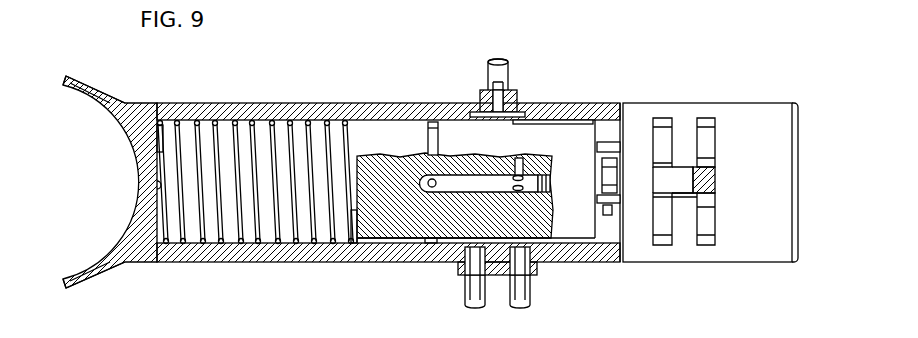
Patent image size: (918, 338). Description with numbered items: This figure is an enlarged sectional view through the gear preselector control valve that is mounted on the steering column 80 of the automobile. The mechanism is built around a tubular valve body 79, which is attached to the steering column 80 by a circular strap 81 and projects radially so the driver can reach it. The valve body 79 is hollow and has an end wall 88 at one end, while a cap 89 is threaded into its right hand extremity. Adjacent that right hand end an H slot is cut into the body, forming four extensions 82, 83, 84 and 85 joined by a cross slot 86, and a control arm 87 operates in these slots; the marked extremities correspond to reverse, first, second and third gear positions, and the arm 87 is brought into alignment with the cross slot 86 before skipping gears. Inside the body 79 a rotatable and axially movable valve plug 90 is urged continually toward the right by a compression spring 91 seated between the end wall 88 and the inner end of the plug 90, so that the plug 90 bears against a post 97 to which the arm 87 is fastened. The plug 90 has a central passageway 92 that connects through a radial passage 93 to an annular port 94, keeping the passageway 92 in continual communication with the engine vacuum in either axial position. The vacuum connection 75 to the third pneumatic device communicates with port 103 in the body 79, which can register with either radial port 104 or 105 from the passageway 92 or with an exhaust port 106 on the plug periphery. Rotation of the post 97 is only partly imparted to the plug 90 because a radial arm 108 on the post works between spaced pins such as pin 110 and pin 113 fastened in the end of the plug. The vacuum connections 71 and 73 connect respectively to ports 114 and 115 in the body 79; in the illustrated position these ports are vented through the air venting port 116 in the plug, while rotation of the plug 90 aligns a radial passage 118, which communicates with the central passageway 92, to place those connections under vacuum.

The vacuum connection 71 is at (531, 302).
The vacuum connection 73 is at (466, 302).
The vacuum connection 75 is at (509, 68).
The tubular valve body 79 is at (247, 103).
The steering column 80 is at (107, 258).
The circular strap 81 is at (80, 82).
The slot extension 82 is at (706, 146).
The slot extension 83 is at (661, 145).
The slot extension 84 is at (661, 226).
The slot extension 85 is at (708, 222).
The cross slot 86 is at (690, 198).
The control arm 87 is at (713, 178).
The end wall 88 is at (156, 189).
The cap 89 is at (798, 172).
The valve plug 90 is at (373, 239).
The compression spring 91 is at (302, 122).
The central passageway 92 is at (479, 183).
The radial passage 93 is at (430, 178).
The annular port 94 is at (435, 122).
The post 97 is at (668, 177).
The port 103 is at (528, 120).
The radial port 104 is at (523, 160).
The radial port 105 is at (524, 179).
The exhaust port 106 is at (613, 120).
The radial arm 108 is at (605, 183).
The pin 110 is at (607, 205).
The pin 113 is at (618, 142).
The port 114 is at (528, 252).
The port 115 is at (471, 250).
The air venting port 116 is at (580, 240).
The radial passage 118 is at (522, 191).